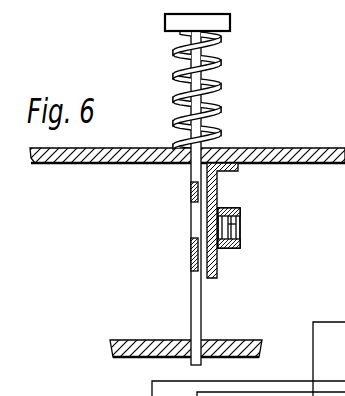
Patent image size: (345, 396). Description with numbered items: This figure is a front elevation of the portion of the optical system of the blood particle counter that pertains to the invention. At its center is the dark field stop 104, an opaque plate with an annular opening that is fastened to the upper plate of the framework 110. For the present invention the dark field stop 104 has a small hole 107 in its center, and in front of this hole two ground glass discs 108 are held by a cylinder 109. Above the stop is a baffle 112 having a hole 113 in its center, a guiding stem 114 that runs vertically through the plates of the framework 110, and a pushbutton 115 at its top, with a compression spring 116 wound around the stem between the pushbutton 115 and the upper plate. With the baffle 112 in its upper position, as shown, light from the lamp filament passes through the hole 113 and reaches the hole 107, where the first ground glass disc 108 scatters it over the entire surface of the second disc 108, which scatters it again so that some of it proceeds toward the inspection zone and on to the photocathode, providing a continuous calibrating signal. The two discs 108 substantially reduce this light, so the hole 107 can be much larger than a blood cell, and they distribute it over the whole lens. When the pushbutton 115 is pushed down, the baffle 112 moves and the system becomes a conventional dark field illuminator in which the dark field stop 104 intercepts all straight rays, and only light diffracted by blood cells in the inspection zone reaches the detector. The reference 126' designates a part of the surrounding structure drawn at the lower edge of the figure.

The dark field stop 104 is at (218, 179).
The small hole 107 is at (213, 227).
The ground glass discs 108 is at (241, 230).
The cylinder 109 is at (228, 204).
The framework 110 is at (285, 148).
The baffle 112 is at (188, 192).
The hole 113 is at (192, 213).
The guiding stem 114 is at (189, 311).
The pushbutton 115 is at (164, 25).
The compression spring 116 is at (222, 57).
The housing 126' is at (220, 359).